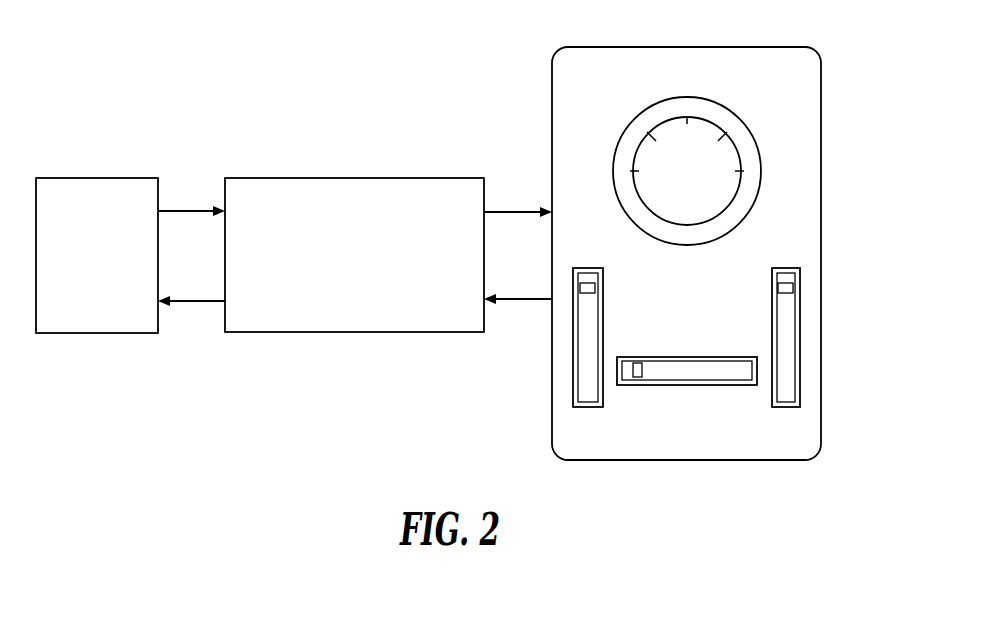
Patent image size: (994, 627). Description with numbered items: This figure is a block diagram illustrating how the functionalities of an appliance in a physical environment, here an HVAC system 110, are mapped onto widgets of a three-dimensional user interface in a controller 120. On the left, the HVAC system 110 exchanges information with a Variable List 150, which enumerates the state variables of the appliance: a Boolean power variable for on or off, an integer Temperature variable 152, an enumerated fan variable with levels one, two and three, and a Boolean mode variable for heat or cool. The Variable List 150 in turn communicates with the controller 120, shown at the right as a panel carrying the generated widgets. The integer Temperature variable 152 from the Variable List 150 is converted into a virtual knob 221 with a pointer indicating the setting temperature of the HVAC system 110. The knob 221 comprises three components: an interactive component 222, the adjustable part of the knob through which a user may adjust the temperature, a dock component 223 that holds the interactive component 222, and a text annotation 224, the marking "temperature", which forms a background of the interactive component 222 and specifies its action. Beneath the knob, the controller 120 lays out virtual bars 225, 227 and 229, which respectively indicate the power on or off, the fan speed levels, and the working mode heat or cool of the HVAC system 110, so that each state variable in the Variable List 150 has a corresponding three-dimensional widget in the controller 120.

The HVAC system 110 is at (97, 178).
The Variable List 150 is at (354, 237).
The integer Temperature variable 152 is at (417, 271).
The controller 120 is at (686, 47).
The virtual knob 221 is at (798, 162).
The interactive component 222 is at (659, 202).
The dock component 223 is at (639, 127).
The text annotation 224 is at (744, 75).
The virtual bar 225 is at (697, 372).
The virtual bar 227 is at (788, 333).
The virtual bar 229 is at (587, 342).